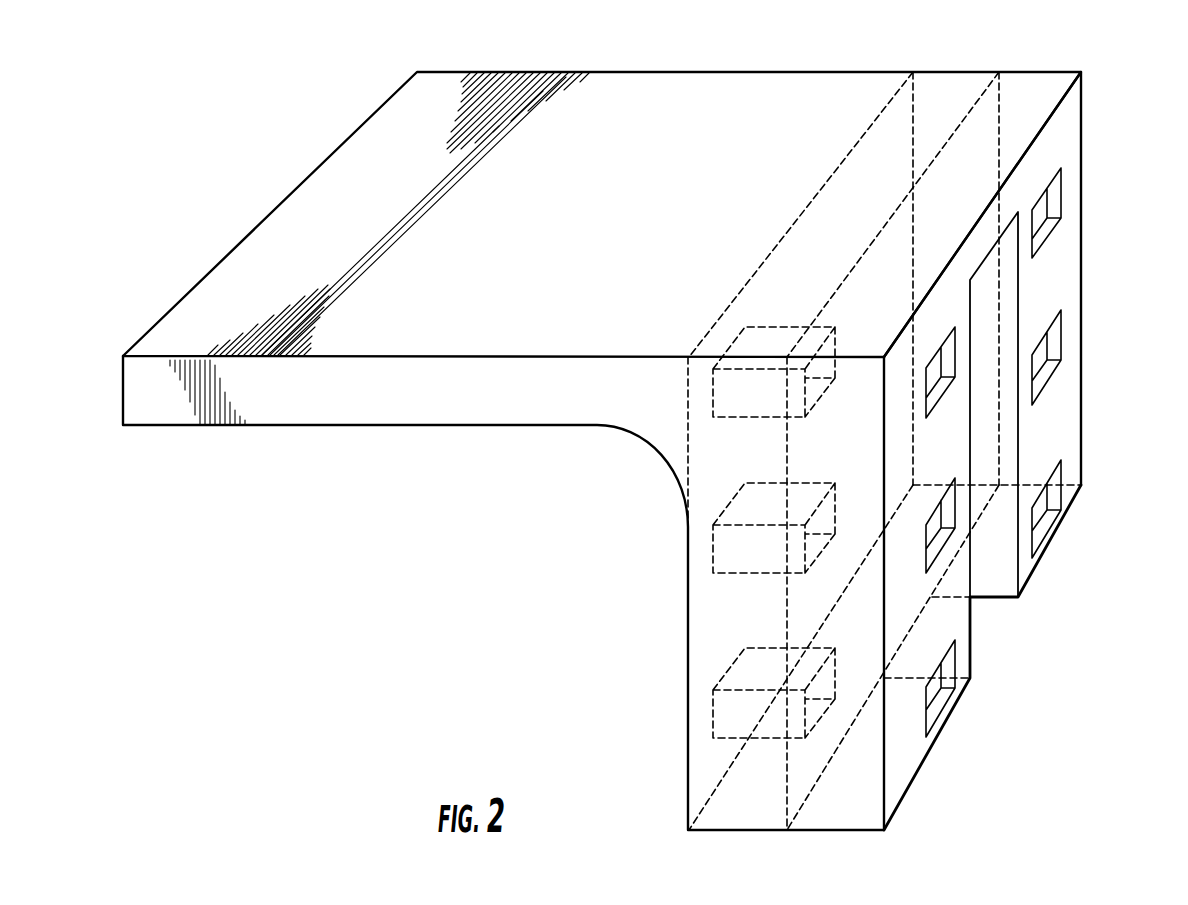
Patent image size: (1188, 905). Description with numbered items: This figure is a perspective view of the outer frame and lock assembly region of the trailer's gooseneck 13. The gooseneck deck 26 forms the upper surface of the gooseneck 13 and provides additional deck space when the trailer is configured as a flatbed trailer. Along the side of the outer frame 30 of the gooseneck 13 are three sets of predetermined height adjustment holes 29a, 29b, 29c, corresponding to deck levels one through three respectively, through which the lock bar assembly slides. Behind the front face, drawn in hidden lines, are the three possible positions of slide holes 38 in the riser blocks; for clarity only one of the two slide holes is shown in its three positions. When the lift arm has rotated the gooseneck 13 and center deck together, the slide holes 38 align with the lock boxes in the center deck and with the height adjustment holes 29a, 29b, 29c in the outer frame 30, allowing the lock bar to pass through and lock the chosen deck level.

The gooseneck 13 is at (640, 64).
The gooseneck deck 26 is at (613, 197).
The outer frame 30 is at (1052, 133).
The predetermined height adjustment holes 29a is at (959, 667).
The predetermined height adjustment holes 29b is at (959, 497).
The predetermined height adjustment holes 29c is at (959, 345).
The slide holes 38 is at (719, 434).